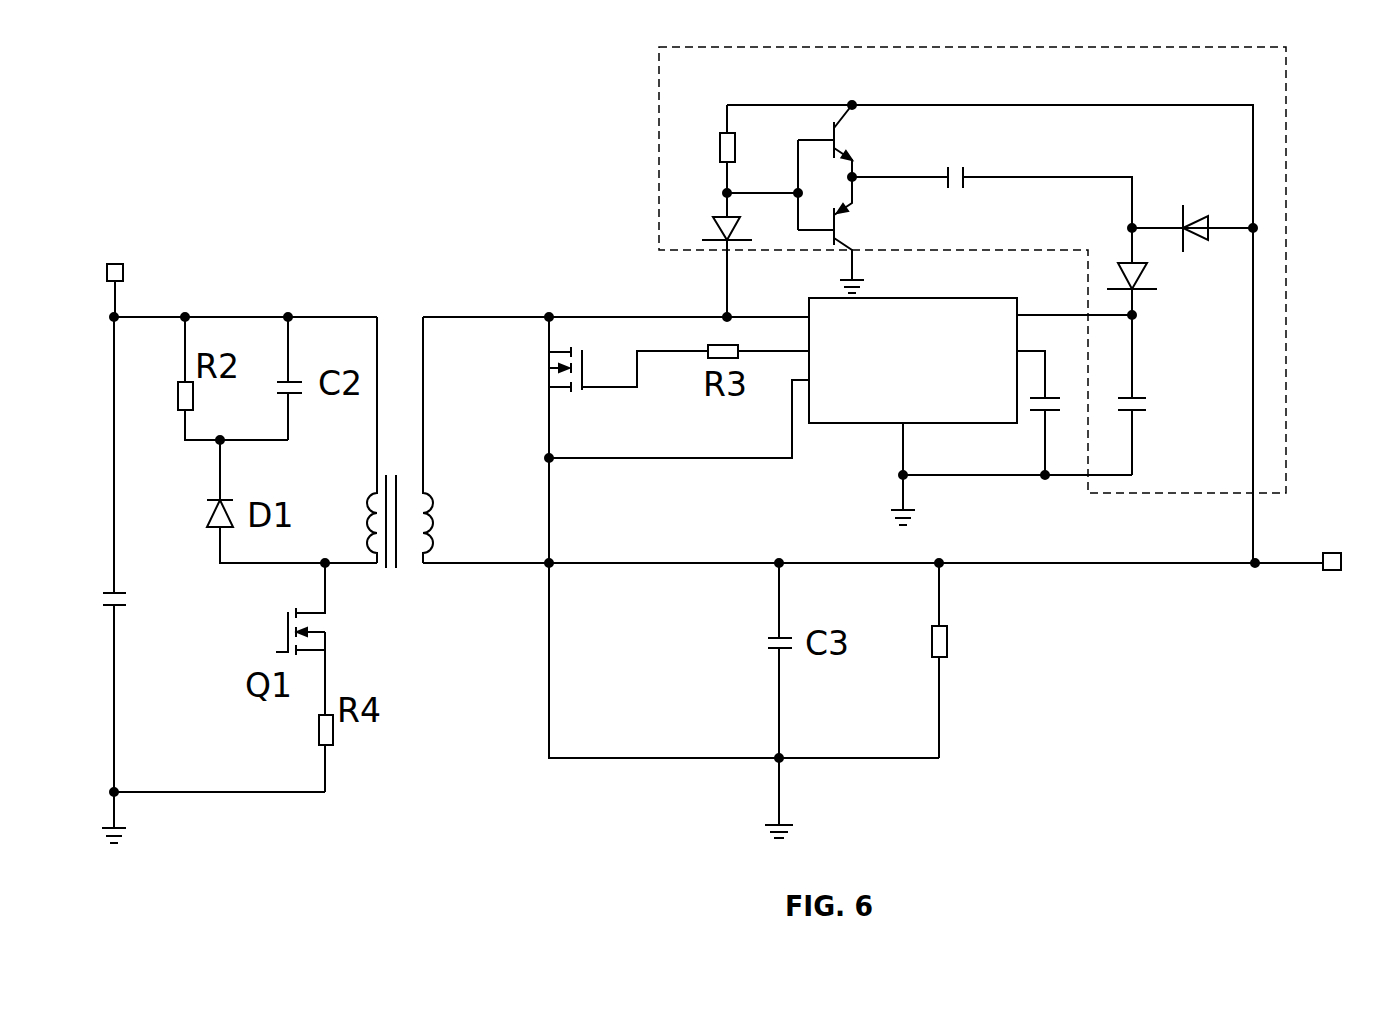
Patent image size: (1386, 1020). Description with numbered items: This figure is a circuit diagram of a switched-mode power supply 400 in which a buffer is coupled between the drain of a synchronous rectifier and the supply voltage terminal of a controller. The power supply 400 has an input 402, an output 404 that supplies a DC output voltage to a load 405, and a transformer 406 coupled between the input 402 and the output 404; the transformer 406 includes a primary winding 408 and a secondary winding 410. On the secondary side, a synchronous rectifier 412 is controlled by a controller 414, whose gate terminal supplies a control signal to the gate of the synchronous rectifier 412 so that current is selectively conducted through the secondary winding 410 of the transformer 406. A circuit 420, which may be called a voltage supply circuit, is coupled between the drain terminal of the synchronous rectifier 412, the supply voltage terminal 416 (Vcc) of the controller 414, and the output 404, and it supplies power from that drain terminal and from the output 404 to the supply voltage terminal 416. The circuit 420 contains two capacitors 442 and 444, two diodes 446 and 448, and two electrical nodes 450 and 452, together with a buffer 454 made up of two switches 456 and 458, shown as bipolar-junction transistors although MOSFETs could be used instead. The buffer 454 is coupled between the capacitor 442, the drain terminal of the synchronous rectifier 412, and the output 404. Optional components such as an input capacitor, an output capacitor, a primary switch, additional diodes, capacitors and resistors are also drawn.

The switched-mode power supply 400 is at (402, 112).
The input 402 is at (125, 272).
The output 404 is at (1330, 552).
The load 405 is at (960, 653).
The transformer 406 is at (393, 574).
The primary winding 408 is at (352, 498).
The secondary winding 410 is at (431, 526).
The synchronous rectifier 412 is at (545, 378).
The controller 414 is at (980, 298).
The supply voltage terminal 416 is at (1073, 306).
The circuit 420 is at (932, 46).
The capacitor 442 is at (993, 154).
The capacitor 444 is at (1150, 402).
The diode 446 is at (1195, 215).
The diode 448 is at (1150, 274).
The electrical node 450 is at (1135, 220).
The electrical node 452 is at (1140, 314).
The buffer 454 is at (774, 99).
The switch 456 is at (907, 241).
The switch 458 is at (918, 154).